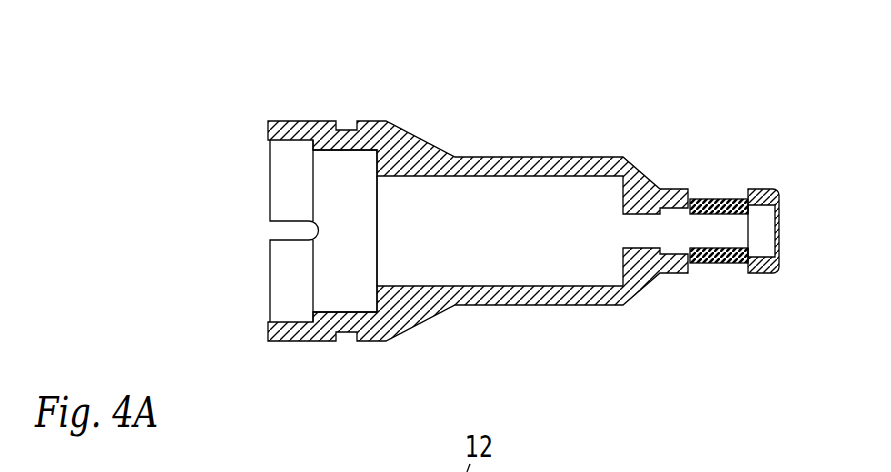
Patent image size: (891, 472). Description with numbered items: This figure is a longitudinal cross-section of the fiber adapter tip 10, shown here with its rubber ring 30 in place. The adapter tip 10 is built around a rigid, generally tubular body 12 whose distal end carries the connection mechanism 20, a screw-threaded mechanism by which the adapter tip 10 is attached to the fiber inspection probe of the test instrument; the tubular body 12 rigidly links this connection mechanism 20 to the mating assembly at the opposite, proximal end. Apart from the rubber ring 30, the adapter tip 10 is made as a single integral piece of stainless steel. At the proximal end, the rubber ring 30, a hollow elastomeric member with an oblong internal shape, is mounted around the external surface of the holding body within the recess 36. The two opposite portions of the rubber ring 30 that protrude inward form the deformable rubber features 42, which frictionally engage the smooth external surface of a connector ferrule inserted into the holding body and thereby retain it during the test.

The fiber adapter tip 10 is at (536, 177).
The tubular body 12 is at (403, 129).
The connection mechanism 20 is at (297, 121).
The rubber ring 30 is at (742, 190).
The recess 36 is at (700, 198).
The deformable rubber features 42 is at (749, 214).